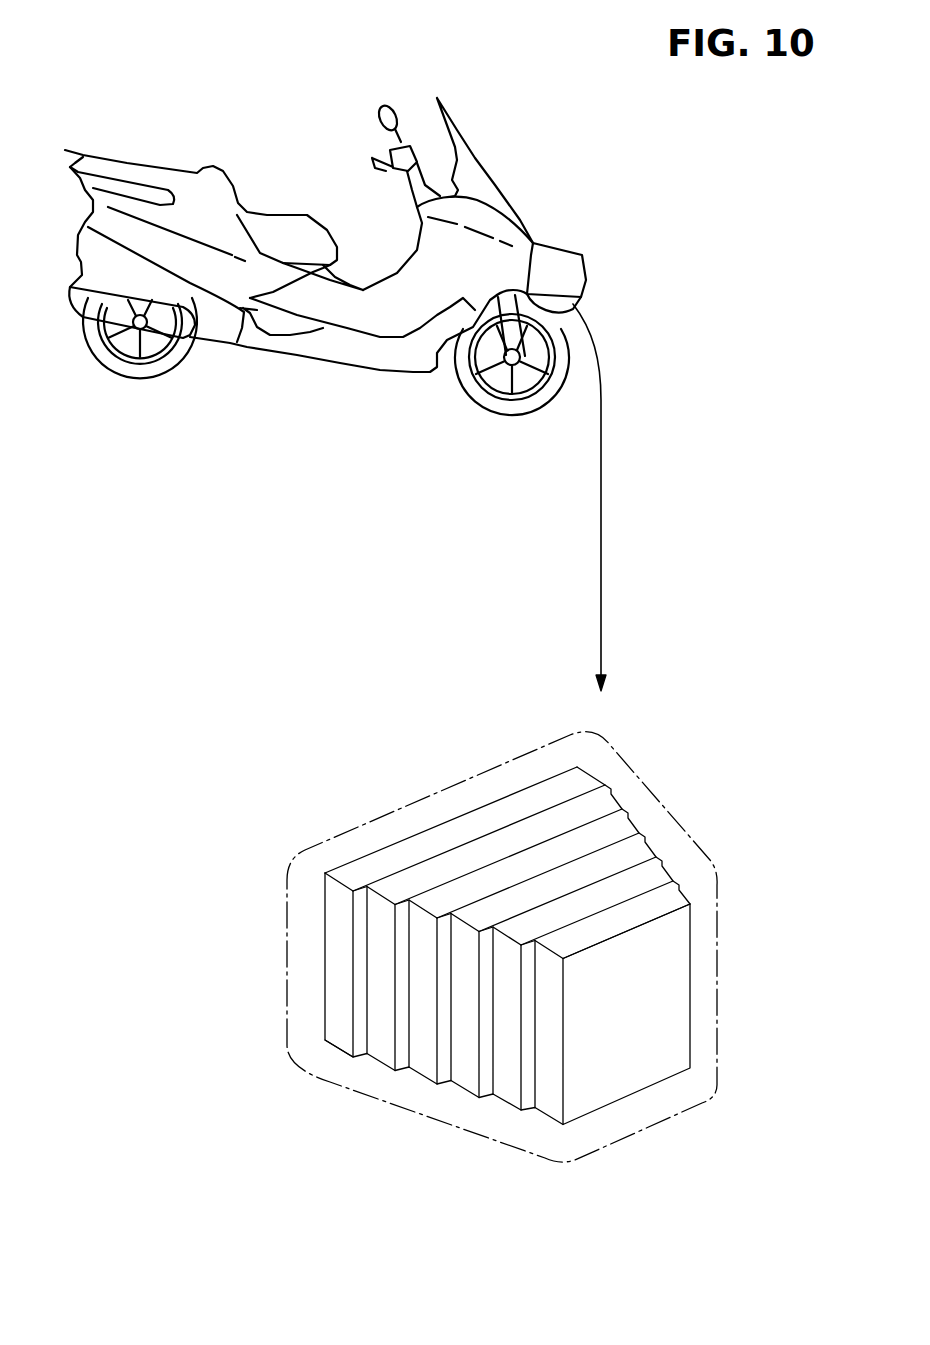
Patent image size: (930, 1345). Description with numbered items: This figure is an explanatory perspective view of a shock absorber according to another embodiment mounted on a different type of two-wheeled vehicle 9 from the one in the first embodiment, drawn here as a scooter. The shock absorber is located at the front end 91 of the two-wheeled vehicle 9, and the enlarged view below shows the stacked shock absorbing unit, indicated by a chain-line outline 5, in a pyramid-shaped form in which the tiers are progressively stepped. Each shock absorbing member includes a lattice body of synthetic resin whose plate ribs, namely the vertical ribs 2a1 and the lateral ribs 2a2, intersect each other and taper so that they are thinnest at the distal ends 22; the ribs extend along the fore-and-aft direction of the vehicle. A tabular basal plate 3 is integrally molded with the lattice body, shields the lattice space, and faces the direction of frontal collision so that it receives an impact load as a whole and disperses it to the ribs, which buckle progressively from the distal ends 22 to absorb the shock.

The two-wheeled vehicle 9 is at (367, 277).
The front end 91 is at (580, 257).
The battery pack (battery box) 5 is at (585, 293).
The distal end 22 is at (370, 852).
The lateral ribs 2a2 is at (607, 860).
The vertical ribs 2a1 is at (462, 1038).
The basal plate 3 is at (362, 972).